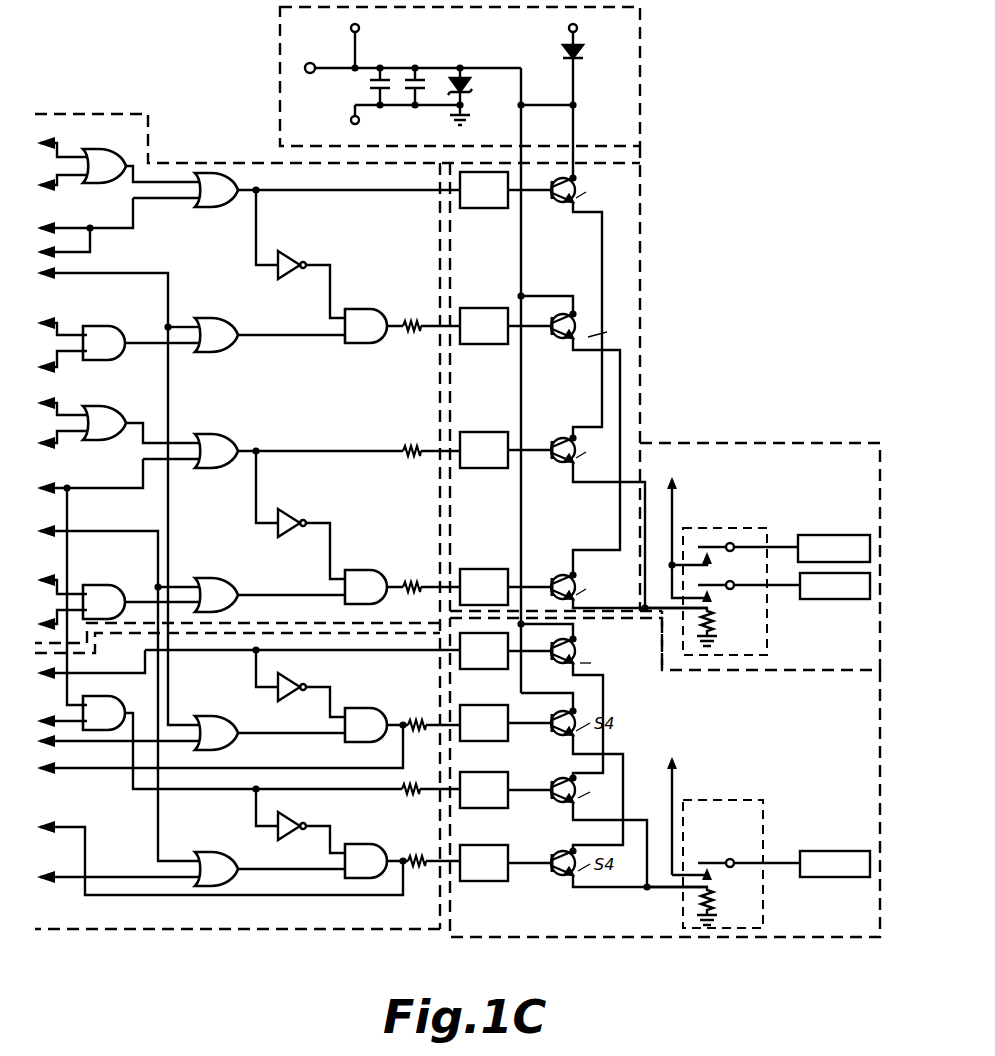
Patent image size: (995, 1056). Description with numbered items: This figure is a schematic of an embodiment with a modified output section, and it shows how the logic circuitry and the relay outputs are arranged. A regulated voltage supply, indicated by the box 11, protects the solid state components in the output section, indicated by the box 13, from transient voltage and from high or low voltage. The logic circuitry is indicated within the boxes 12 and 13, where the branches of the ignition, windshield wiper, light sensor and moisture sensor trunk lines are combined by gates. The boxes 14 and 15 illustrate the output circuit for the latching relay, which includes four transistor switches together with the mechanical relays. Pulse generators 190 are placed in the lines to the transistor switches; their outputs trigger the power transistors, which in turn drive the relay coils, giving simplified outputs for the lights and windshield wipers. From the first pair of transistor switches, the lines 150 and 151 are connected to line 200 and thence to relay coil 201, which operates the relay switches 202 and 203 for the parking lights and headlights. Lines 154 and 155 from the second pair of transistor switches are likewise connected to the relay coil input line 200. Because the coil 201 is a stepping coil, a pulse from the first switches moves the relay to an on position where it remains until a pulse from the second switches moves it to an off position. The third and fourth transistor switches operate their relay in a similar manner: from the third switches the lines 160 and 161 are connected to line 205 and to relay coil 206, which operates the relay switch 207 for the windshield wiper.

The regulated voltage supply 11 is at (647, 79).
The logic circuitry box 12 is at (87, 112).
The output section 13 is at (201, 937).
The output circuit box 14 is at (743, 536).
The output circuit box 15 is at (665, 799).
The line from switch S1 150 is at (602, 245).
The line from switch S1 151 is at (602, 484).
The line from switch S2 154 is at (622, 369).
The line from switch S2 155 is at (616, 606).
The line from switch S3 160 is at (603, 696).
The line from switch S3 161 is at (588, 822).
The pulse generator 190 is at (500, 201).
The relay coil input line 200 is at (657, 620).
The relay coil 201 is at (735, 613).
The relay switch 202 is at (732, 516).
The relay switch 203 is at (706, 583).
The relay coil input line 205 is at (651, 892).
The relay coil 206 is at (737, 898).
The relay switch 207 is at (734, 832).